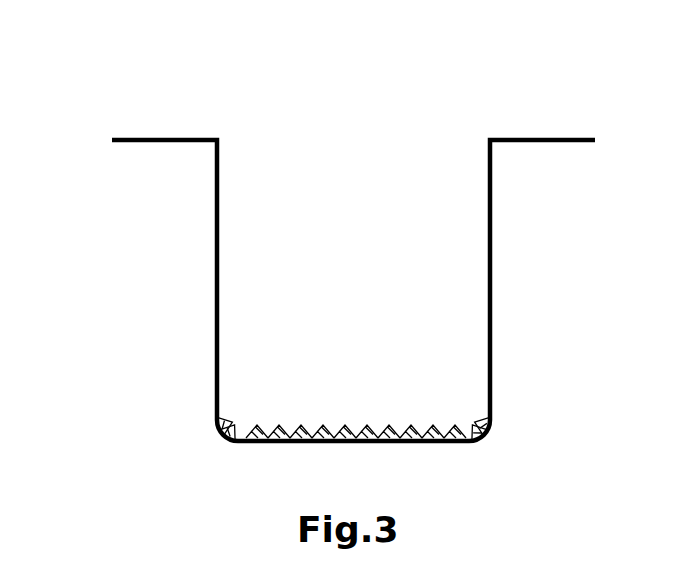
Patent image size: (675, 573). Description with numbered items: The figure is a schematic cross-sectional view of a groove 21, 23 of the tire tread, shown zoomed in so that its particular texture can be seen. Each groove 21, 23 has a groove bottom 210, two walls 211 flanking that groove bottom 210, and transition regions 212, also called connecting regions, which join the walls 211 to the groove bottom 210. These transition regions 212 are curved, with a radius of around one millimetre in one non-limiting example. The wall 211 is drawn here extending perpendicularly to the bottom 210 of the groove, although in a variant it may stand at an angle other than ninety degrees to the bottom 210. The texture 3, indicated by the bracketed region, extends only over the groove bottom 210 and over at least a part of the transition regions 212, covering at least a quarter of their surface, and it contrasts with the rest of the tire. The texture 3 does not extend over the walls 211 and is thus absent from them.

The groove 21 is at (308, 260).
The groove 23 is at (308, 260).
The wall 211 is at (206, 283).
The transition region 212 is at (208, 424).
The groove bottom 210 is at (353, 448).
The texture 3 is at (482, 393).